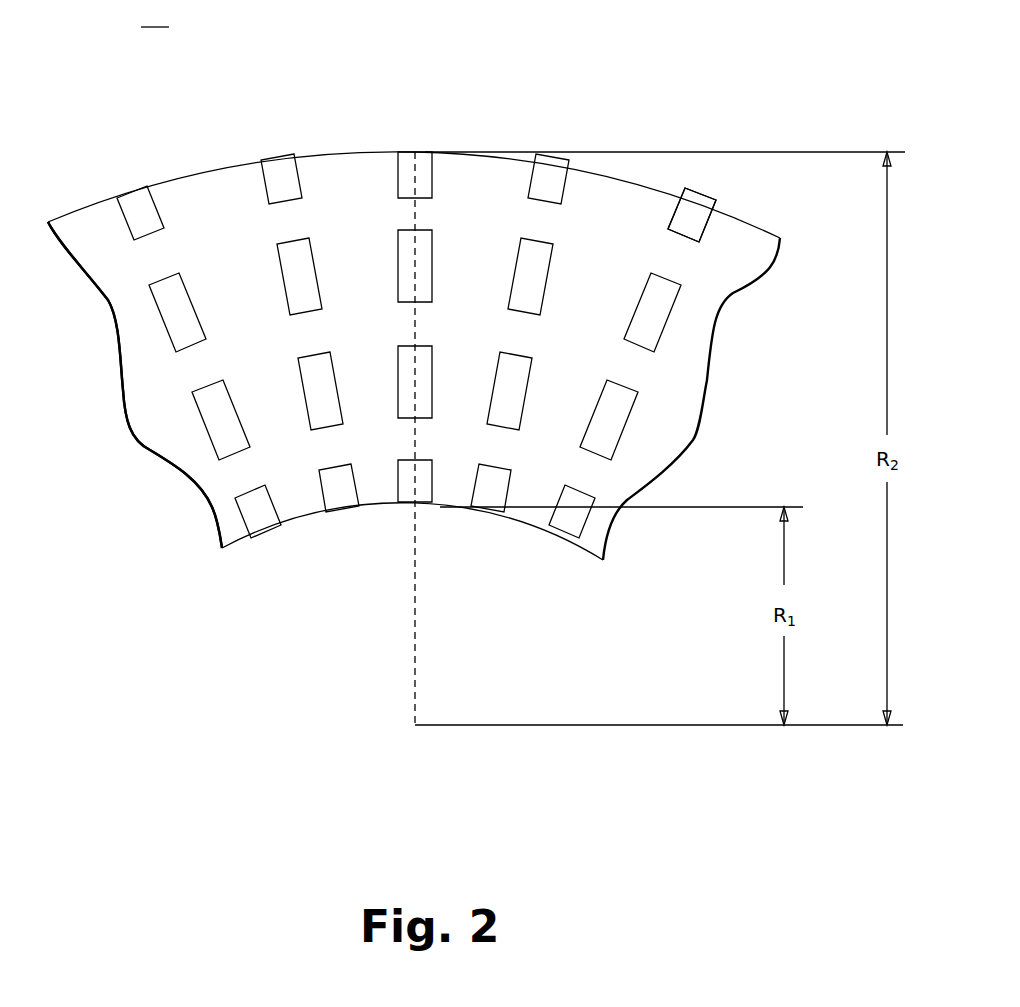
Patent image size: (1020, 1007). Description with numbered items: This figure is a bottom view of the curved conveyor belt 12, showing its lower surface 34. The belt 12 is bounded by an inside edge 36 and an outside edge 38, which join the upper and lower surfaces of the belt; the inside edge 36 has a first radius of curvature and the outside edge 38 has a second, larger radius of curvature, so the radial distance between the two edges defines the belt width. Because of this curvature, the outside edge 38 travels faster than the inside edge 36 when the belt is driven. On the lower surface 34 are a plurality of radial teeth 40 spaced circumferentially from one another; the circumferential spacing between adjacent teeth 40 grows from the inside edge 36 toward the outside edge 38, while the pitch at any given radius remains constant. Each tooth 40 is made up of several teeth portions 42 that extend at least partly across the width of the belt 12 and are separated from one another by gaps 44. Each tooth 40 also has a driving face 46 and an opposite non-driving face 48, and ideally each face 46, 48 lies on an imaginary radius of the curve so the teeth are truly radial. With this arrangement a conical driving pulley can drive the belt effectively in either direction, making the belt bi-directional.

The belt 12 is at (156, 15).
The lower surface 34 is at (414, 341).
The inside edge 36 is at (375, 505).
The outside edge 38 is at (313, 152).
The radial teeth 40 is at (116, 217).
The teeth portions 42 is at (182, 307).
The gaps 44 is at (153, 257).
The driving face 46 is at (603, 190).
The non-driving face 48 is at (603, 190).